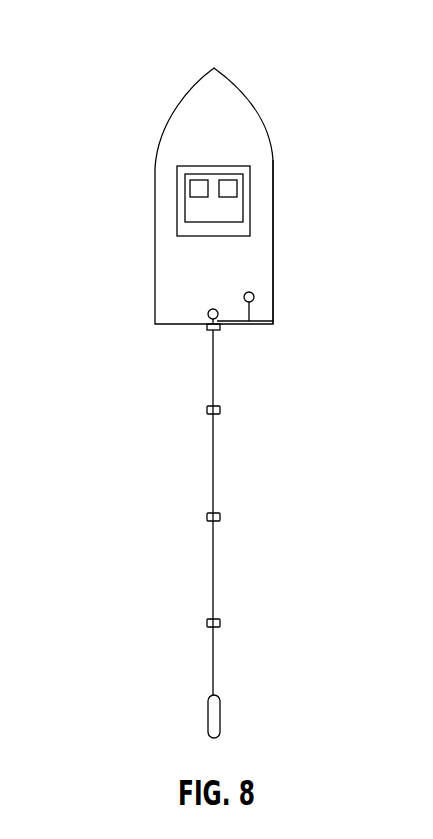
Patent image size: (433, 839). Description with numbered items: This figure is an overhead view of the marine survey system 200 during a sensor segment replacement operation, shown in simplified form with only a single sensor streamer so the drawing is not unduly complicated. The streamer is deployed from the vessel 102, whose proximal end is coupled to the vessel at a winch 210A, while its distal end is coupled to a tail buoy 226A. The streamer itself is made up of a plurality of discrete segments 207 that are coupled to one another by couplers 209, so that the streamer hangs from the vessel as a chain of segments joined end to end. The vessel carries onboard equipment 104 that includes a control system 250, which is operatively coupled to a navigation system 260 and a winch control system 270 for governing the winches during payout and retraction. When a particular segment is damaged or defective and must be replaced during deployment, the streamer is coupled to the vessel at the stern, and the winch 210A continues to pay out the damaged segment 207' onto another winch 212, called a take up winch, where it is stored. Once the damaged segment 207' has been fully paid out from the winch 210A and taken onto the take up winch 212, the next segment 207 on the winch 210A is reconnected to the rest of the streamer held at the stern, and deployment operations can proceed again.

The marine survey system 200 is at (128, 27).
The vessel 102 is at (172, 112).
The onboard equipment 104 is at (262, 170).
The control system 250 is at (185, 216).
The navigation system 260 is at (190, 189).
The winch control system 270 is at (238, 189).
The winch 210A is at (213, 308).
The take up winch 212 is at (253, 294).
The damaged segment 207' is at (280, 324).
The segment 207 is at (252, 512).
The coupler 209 is at (207, 410).
The tail buoy 226A is at (221, 716).